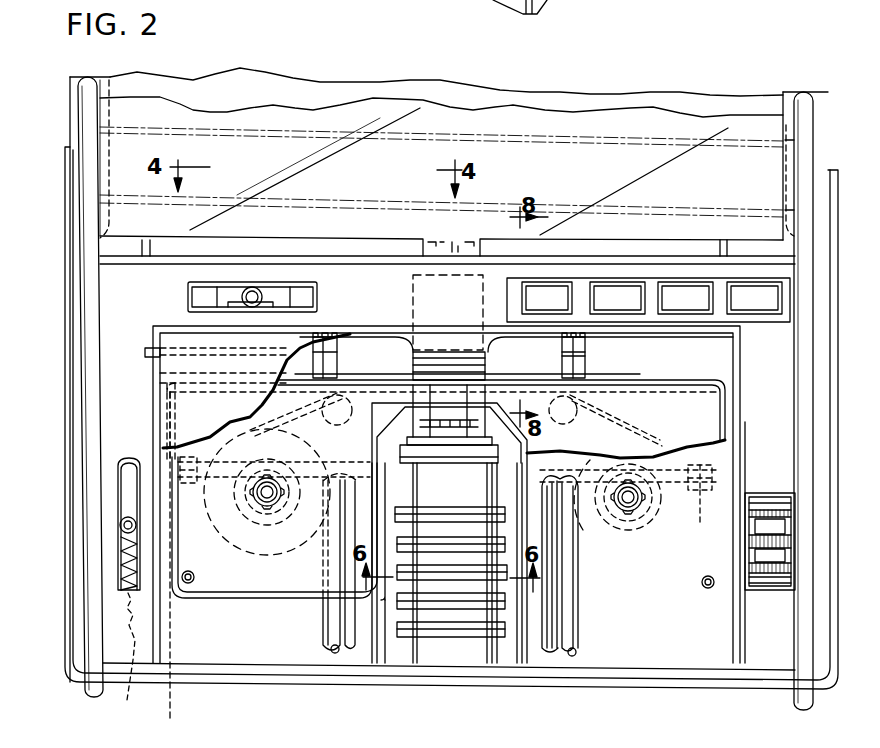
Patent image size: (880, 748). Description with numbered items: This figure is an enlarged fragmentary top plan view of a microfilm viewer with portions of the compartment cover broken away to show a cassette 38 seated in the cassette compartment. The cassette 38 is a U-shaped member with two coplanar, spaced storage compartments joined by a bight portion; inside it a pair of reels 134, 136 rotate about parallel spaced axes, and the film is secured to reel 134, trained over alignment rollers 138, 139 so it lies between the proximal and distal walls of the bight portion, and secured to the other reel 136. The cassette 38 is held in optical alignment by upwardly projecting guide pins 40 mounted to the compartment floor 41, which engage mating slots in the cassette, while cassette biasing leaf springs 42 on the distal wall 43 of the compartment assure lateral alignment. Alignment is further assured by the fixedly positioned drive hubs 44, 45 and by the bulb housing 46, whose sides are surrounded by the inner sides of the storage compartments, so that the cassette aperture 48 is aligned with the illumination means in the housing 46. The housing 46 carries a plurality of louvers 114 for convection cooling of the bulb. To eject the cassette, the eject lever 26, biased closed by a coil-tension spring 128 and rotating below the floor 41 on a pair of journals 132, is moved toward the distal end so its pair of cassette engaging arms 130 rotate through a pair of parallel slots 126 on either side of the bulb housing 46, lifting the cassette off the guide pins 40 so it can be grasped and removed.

The eject lever 26 is at (120, 527).
The cassette 38 is at (237, 598).
The guide pins 40 is at (190, 583).
The compartment floor 41 is at (655, 650).
The cassette biasing leaf springs 42 is at (343, 359).
The distal wall 43 is at (662, 337).
The drive hub 44 is at (267, 497).
The drive hub 45 is at (633, 512).
The bulb housing 46 is at (420, 648).
The cassette aperture 48 is at (492, 372).
The louvers 114 is at (453, 570).
The slots 126 is at (338, 654).
The coil-tension spring 128 is at (132, 700).
The cassette engaging arms 130 is at (337, 627).
The journals 132 is at (183, 535).
The reel 134 is at (250, 522).
The reel 136 is at (588, 540).
The alignment roller 138 is at (326, 425).
The alignment roller 139 is at (560, 424).